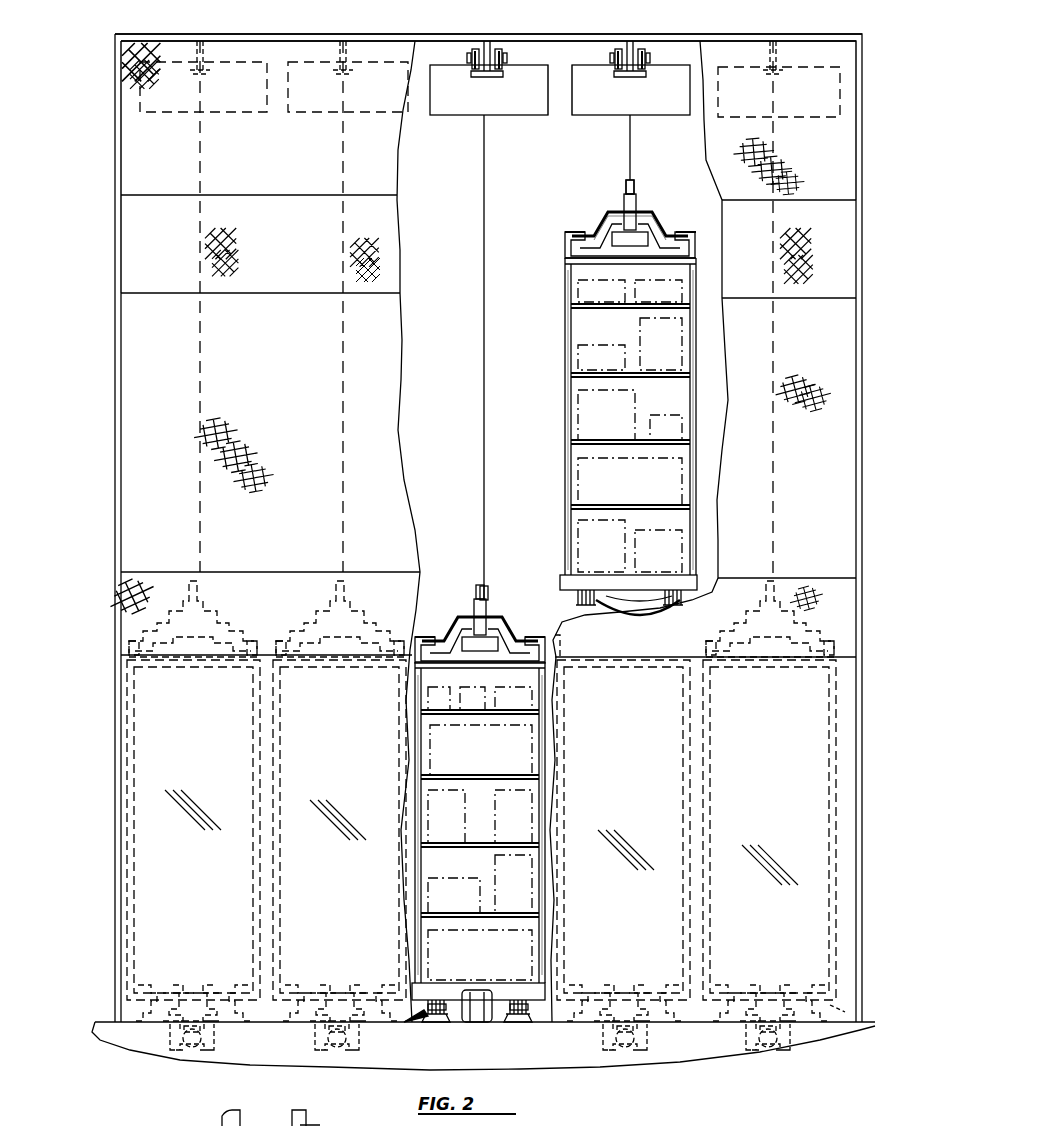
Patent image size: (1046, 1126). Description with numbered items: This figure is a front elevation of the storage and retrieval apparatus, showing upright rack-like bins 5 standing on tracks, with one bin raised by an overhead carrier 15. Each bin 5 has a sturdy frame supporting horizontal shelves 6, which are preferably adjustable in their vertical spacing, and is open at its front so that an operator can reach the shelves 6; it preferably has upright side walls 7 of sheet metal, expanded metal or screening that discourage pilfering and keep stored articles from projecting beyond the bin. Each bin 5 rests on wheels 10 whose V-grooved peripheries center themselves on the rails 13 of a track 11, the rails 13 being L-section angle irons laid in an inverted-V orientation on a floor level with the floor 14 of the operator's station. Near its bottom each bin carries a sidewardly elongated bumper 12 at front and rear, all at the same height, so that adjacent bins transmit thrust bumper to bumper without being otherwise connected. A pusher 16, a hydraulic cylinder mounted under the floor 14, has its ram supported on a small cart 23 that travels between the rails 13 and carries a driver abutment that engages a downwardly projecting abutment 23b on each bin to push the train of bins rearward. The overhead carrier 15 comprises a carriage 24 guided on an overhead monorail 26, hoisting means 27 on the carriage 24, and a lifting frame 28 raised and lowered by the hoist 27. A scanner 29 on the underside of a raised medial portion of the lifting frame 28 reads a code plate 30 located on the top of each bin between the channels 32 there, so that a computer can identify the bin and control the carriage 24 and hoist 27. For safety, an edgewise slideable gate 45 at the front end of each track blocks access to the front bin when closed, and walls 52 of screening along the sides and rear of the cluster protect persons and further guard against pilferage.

The bin 5 is at (560, 330).
The shelves 6 is at (588, 306).
The side walls 7 is at (697, 392).
The wheels 10 is at (682, 600).
The track 11 is at (408, 1022).
The bumpers 12 is at (695, 585).
The rails 13 is at (440, 1022).
The floor 14 is at (874, 1024).
The overhead carrier 15 is at (553, 62).
The pusher 16 is at (322, 1040).
The cart 23 is at (480, 988).
The downwardly projecting abutment 23b is at (640, 616).
The carriage 24 is at (290, 112).
The overhead monorail 26 is at (343, 60).
The hoisting means 27 is at (640, 178).
The lifting frame 28 is at (664, 212).
The scanner 29 is at (602, 222).
The code plate 30 is at (660, 244).
The channels 32 is at (572, 234).
The gate 45 is at (200, 832).
The walls 52 is at (830, 386).